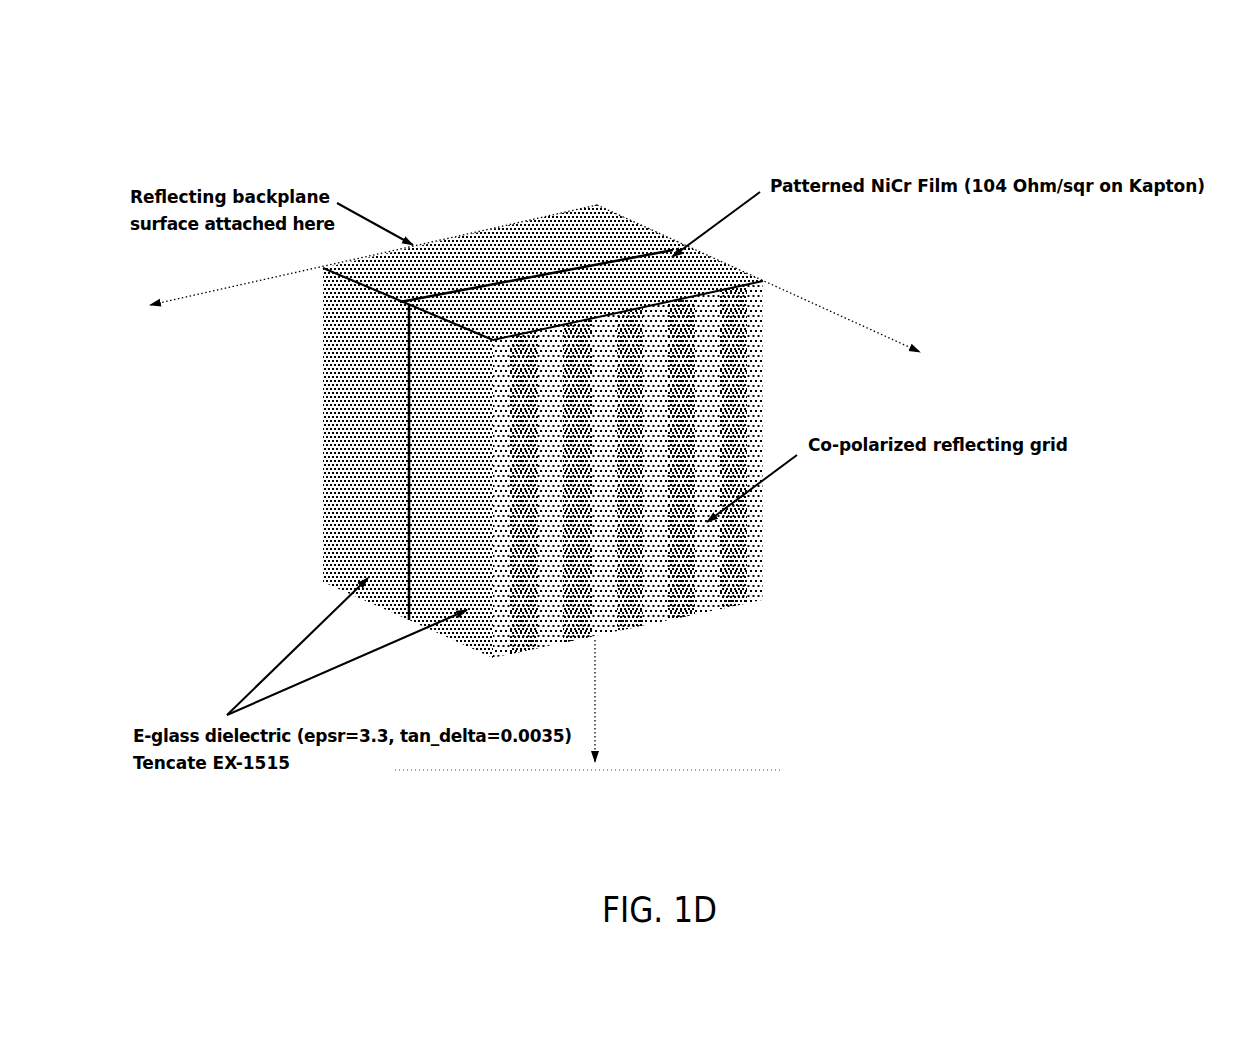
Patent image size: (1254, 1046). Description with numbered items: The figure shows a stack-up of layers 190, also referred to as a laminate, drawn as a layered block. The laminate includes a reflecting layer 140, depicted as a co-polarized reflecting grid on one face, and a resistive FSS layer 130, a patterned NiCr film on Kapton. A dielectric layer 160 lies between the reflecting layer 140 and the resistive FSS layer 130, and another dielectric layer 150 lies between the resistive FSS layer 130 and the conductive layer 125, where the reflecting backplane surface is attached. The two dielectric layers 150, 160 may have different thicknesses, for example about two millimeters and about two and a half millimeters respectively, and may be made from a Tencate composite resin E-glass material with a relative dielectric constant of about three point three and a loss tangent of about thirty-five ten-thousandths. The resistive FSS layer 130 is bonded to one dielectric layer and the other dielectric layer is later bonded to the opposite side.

The conductive layer 125 is at (482, 232).
The resistive FSS layer 130 is at (667, 242).
The reflecting layer 140 is at (767, 381).
The dielectric layer 150 is at (355, 424).
The dielectric layer 160 is at (450, 506).
The stack-up of layers 190 is at (535, 336).